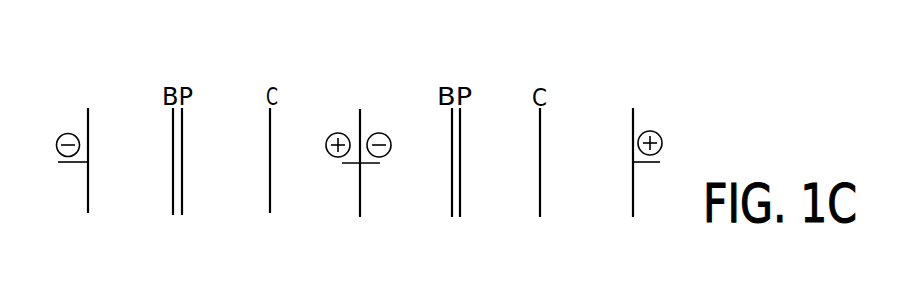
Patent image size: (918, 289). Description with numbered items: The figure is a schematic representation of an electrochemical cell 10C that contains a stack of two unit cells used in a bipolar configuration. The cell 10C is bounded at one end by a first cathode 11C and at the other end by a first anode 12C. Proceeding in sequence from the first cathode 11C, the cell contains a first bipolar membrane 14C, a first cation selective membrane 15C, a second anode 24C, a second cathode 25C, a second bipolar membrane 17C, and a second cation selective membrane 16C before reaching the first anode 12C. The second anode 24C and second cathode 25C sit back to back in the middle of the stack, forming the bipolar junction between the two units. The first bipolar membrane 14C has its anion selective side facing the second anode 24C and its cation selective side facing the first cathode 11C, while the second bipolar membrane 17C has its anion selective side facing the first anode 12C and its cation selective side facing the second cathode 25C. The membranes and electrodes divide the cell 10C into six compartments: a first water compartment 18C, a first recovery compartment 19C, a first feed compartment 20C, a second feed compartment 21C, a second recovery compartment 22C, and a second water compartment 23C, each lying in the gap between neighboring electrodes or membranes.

The electrochemical cell 10C is at (662, 48).
The first cathode 11C is at (88, 130).
The first anode 12C is at (633, 123).
The first bipolar membrane 14C is at (182, 135).
The first cation selective membrane 15C is at (270, 131).
The second cation selective membrane 16C is at (540, 125).
The second bipolar membrane 17C is at (460, 127).
The first water compartment 18C is at (136, 197).
The first recovery compartment 19C is at (236, 197).
The first feed compartment 20C is at (323, 197).
The second feed compartment 21C is at (601, 199).
The second recovery compartment 22C is at (505, 197).
The second water compartment 23C is at (417, 197).
The second anode 24C is at (360, 125).
The second cathode 25C is at (362, 121).